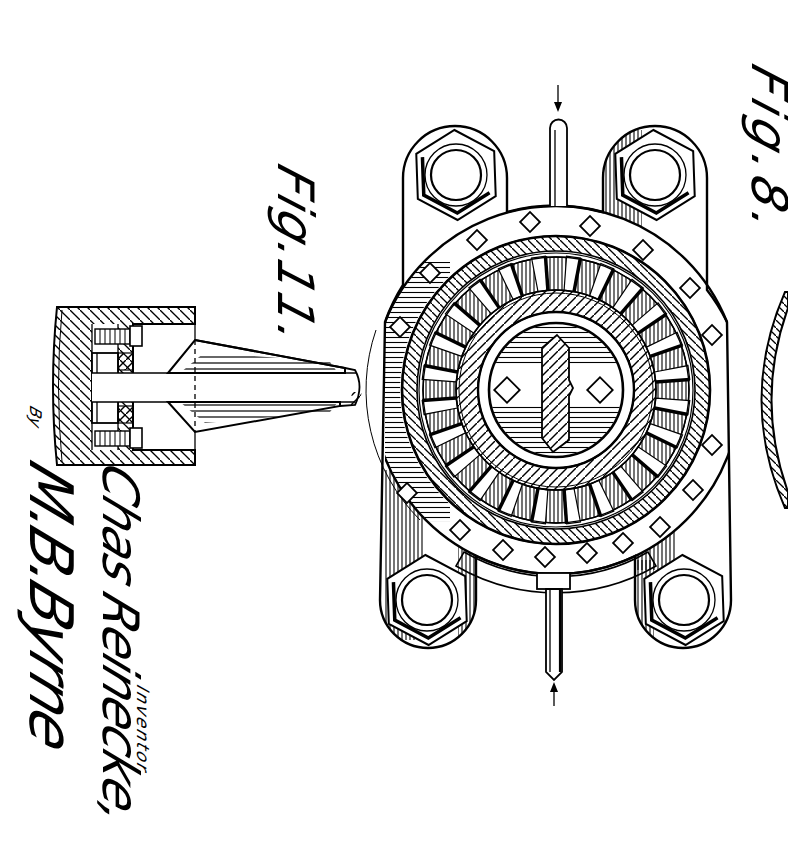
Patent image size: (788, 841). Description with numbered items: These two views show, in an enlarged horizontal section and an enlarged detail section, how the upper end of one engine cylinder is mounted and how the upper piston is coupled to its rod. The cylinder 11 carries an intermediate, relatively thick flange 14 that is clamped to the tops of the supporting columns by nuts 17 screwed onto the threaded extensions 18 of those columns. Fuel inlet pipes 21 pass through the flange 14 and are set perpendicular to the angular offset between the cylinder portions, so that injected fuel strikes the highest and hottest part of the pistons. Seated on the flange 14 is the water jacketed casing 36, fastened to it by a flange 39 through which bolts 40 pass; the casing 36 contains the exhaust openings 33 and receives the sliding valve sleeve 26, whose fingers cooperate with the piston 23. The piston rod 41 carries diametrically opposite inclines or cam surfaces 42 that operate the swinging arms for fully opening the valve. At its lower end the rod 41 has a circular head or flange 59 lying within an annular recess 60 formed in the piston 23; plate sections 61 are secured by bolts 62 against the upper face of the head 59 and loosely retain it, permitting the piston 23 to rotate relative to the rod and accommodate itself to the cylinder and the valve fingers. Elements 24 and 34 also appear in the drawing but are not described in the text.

In FIG. 8, the flange 14 is at (414, 230).
In FIG. 8, the nuts 17 is at (457, 146).
In FIG. 8, the threaded extensions 18 is at (470, 168).
In FIG. 8, the cylinder 11 is at (393, 360).
In FIG. 8, the fuel inlet pipes 21 is at (566, 140).
In FIG. 8, the piston 23 is at (620, 417).
In FIG. 11, the piston 23 is at (179, 442).
In FIG. 8, the shaft key 24 is at (545, 393).
In FIG. 8, the valve sleeve 26 is at (556, 390).
In FIG. 8, the exhaust openings 33 is at (513, 370).
In FIG. 8, the pin 34 is at (597, 370).
In FIG. 8, the casing 36 is at (423, 523).
In FIG. 8, the flange 39 is at (607, 552).
In FIG. 8, the bolts 40 is at (538, 572).
In FIG. 11, the piston rod 41 is at (348, 404).
In FIG. 11, the inclines or cam surfaces 42 is at (263, 365).
In FIG. 11, the circular head or flange 59 is at (108, 366).
In FIG. 11, the annular recess 60 is at (68, 333).
In FIG. 11, the plate sections 61 is at (140, 420).
In FIG. 11, the bolts 62 is at (147, 338).